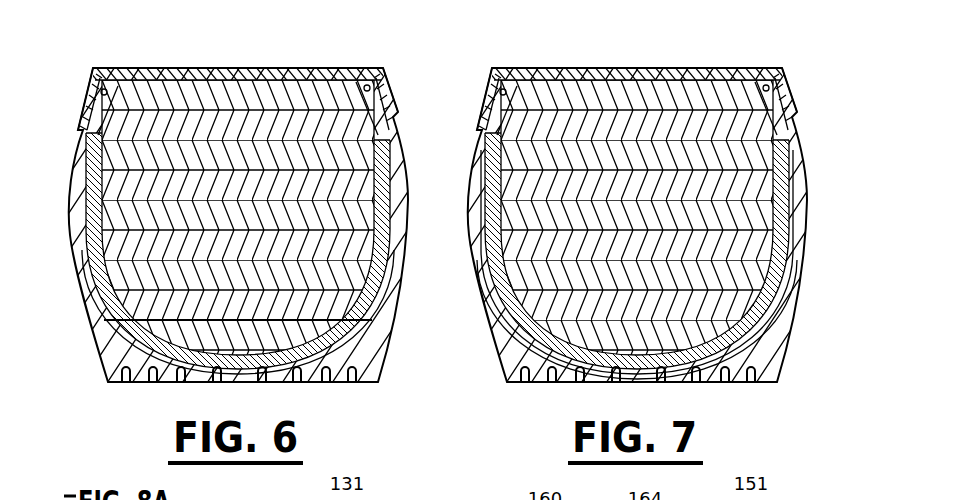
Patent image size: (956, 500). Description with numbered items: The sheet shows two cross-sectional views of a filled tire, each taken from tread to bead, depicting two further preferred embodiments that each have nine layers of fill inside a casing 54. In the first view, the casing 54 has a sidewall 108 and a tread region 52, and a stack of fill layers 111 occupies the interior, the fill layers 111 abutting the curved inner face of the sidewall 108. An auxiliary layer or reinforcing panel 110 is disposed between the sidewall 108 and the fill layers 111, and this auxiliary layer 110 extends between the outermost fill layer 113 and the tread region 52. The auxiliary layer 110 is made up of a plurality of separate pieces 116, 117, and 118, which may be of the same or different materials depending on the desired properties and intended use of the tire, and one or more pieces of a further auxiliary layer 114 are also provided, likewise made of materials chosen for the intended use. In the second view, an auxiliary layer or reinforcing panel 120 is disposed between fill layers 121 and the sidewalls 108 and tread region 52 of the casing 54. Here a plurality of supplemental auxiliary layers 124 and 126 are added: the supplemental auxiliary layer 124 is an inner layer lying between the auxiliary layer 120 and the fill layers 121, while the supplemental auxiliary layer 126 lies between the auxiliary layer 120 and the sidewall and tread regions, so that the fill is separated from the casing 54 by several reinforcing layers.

In FIG. 6, the tread region 52 is at (153, 385).
In FIG. 7, the tread region 52 is at (635, 401).
In FIG. 6, the casing 54 is at (83, 124).
In FIG. 7, the casing 54 is at (801, 102).
In FIG. 6, the sidewall 108 is at (390, 143).
In FIG. 6, the auxiliary layer 110 is at (390, 190).
In FIG. 6, the fill layers 111 is at (226, 100).
In FIG. 6, the outermost fill layer 113 is at (318, 330).
In FIG. 6, the further auxiliary layer 114 is at (382, 245).
In FIG. 6, the separate piece of auxiliary layer 116 is at (330, 299).
In FIG. 6, the separate piece of auxiliary layer 117 is at (320, 333).
In FIG. 6, the separate piece of auxiliary layer 118 is at (110, 295).
In FIG. 7, the auxiliary layer 120 is at (658, 225).
In FIG. 7, the fill layers 121 is at (637, 69).
In FIG. 7, the supplemental auxiliary layer 124 is at (668, 253).
In FIG. 7, the supplemental auxiliary layer 126 is at (667, 264).